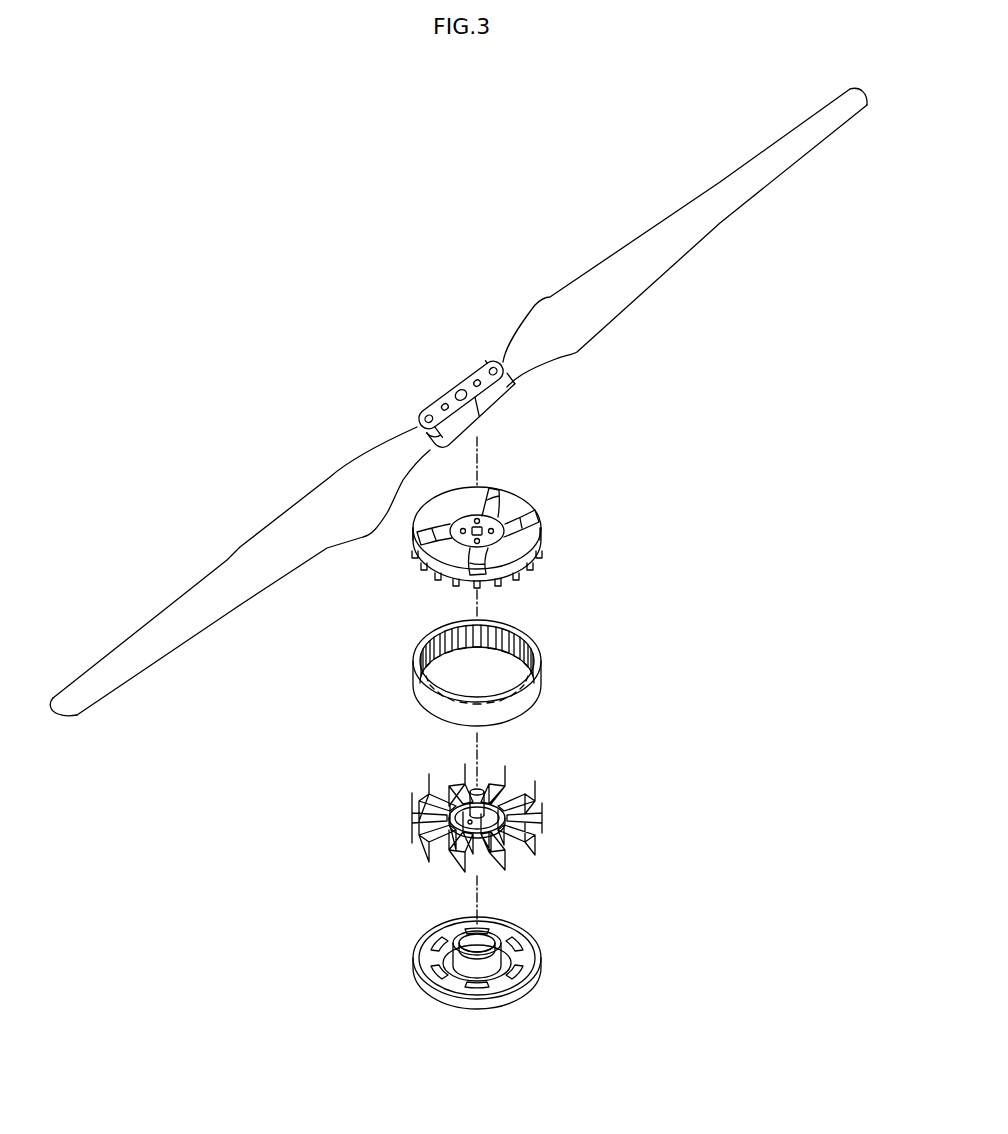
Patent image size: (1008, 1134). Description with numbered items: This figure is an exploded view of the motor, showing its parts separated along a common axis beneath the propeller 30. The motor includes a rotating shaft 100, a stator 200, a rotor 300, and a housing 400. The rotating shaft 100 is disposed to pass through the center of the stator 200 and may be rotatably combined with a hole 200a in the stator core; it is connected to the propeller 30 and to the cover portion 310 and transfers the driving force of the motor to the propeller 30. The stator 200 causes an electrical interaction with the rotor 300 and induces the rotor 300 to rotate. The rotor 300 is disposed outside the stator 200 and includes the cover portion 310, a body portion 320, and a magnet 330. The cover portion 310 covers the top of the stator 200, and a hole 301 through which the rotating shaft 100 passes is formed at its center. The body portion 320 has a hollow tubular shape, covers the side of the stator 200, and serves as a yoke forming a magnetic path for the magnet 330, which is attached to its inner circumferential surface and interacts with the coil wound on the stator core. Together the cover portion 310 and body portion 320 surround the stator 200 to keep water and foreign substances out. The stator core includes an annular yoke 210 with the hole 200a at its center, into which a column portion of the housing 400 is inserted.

The propeller 30 is at (590, 258).
The rotating shaft 100 is at (480, 784).
The stator 200 is at (503, 812).
The hole 200a is at (443, 819).
The yoke 210 is at (520, 835).
The rotor 300 is at (633, 542).
The hole 301 is at (480, 521).
The cover portion 310 is at (524, 513).
The body portion 320 is at (524, 673).
The magnet 330 is at (522, 627).
The housing 400 is at (553, 953).